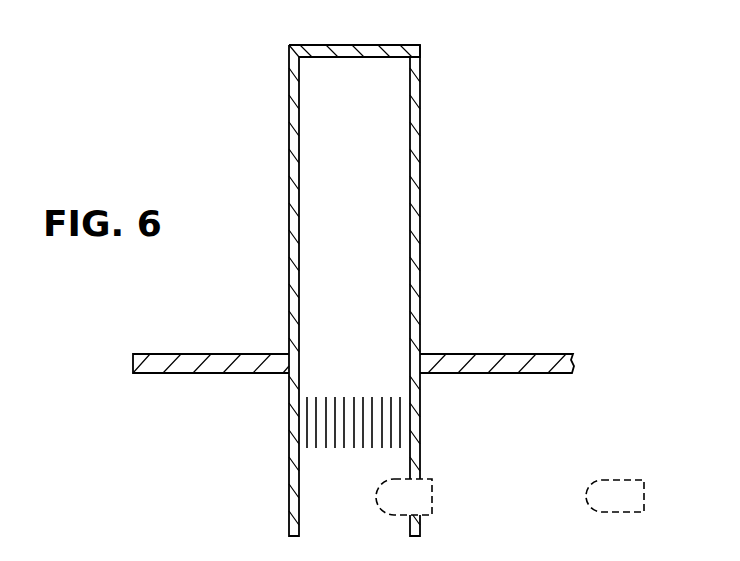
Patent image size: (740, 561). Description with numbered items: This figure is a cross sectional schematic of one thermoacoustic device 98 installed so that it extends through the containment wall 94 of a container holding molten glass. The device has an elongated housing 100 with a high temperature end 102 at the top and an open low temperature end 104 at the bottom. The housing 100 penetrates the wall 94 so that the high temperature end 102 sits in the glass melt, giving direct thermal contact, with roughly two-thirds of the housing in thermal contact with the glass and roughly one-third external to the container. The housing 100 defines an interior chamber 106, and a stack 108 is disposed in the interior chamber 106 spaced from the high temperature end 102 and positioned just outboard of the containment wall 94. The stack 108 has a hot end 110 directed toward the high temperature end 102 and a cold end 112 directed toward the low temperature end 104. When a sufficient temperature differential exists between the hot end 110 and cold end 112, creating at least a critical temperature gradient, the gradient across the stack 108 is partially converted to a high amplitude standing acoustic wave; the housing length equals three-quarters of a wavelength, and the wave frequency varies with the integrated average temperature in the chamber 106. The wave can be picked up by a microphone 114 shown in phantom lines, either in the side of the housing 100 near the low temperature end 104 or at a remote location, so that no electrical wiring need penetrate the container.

The wall 94 is at (505, 355).
The thermoacoustic device 98 is at (388, 276).
The housing 100 is at (322, 276).
The high temperature end 102 is at (348, 45).
The low temperature end 104 is at (295, 507).
The interior chamber 106 is at (315, 135).
The stack 108 is at (392, 427).
The hot end 110 is at (336, 397).
The cold end 112 is at (335, 448).
The microphone 114 is at (423, 500).